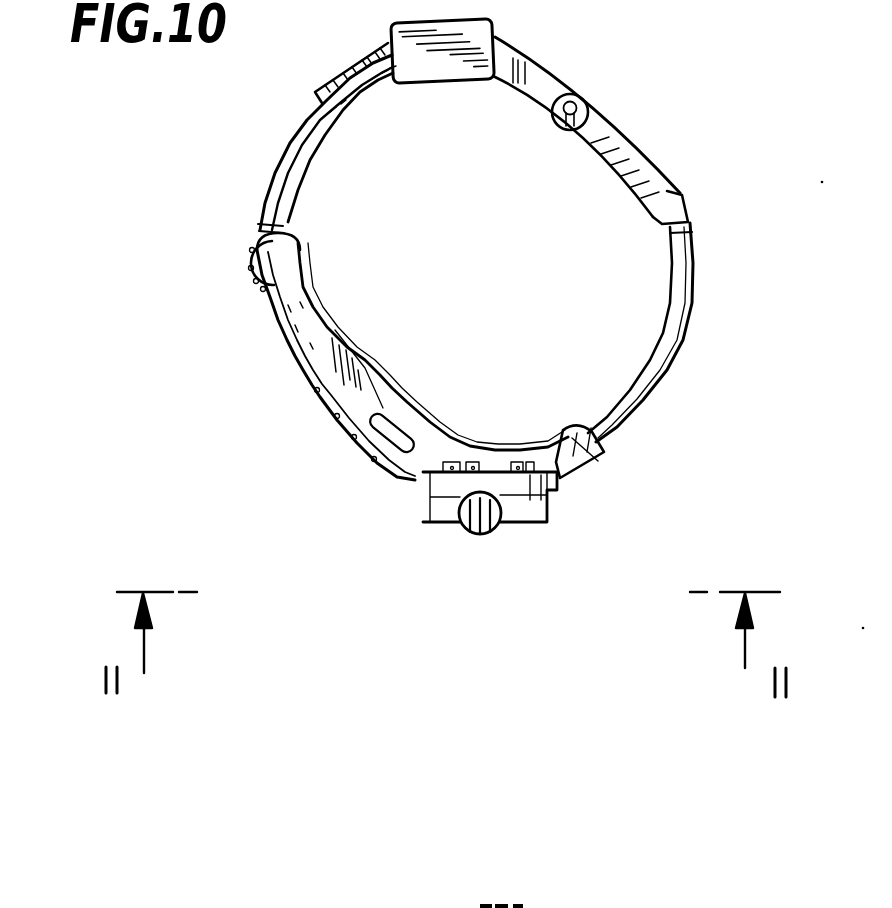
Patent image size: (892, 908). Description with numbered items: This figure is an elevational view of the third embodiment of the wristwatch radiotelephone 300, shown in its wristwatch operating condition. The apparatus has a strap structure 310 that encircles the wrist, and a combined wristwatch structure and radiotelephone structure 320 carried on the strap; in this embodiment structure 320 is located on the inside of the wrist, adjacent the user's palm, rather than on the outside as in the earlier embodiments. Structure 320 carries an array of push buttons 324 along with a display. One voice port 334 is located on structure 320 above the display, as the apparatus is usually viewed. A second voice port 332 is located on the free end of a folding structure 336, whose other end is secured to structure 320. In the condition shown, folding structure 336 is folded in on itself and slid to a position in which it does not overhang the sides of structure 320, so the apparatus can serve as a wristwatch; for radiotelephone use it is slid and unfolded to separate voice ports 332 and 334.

The wristwatch radiotelephone 300 is at (767, 60).
The strap structure 310 is at (667, 377).
The combined wristwatch structure and radiotelephone structure 320 is at (392, 388).
The array of push buttons 324 is at (374, 459).
The voice port 332 is at (487, 537).
The voice port 334 is at (247, 255).
The folding structure 336 is at (533, 522).